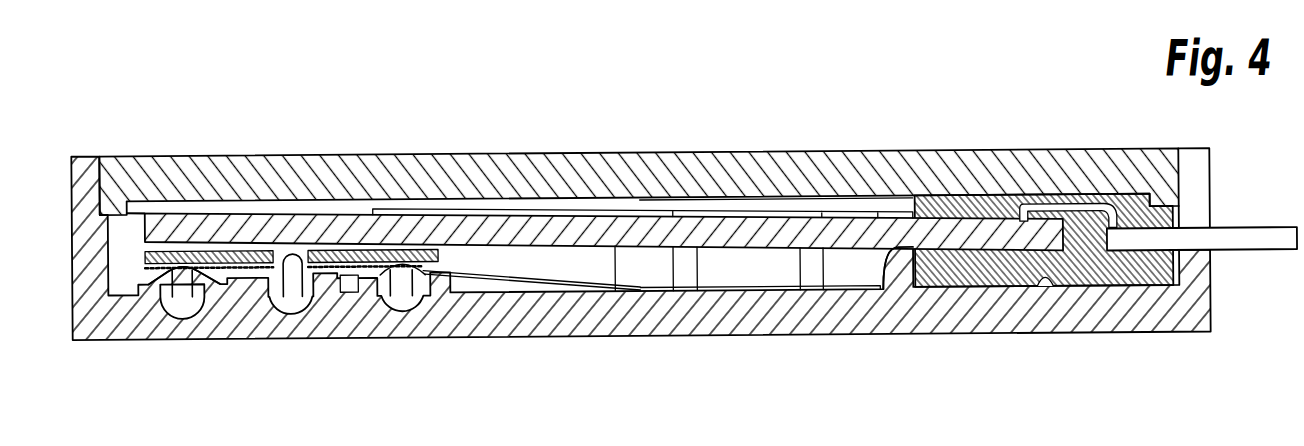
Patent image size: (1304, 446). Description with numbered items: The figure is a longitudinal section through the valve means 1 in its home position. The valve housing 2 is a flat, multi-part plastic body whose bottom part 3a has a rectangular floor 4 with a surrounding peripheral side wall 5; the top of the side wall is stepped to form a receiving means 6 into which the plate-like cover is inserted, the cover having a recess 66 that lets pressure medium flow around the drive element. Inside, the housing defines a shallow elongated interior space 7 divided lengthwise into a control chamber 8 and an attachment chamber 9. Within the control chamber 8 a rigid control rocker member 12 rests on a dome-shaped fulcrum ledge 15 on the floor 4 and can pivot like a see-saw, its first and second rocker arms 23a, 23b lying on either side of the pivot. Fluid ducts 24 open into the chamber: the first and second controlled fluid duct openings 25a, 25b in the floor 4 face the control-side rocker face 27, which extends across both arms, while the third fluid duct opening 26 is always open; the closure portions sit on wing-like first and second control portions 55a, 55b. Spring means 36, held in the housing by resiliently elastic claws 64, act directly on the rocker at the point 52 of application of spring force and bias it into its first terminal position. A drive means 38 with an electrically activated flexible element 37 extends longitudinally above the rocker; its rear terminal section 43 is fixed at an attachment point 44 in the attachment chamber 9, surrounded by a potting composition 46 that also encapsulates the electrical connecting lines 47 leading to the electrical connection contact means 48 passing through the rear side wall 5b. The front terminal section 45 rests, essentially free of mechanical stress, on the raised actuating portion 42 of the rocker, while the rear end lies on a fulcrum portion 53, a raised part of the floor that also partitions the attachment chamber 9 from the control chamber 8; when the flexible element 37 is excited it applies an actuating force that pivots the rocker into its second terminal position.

The valve means 1 is at (904, 126).
The valve housing 2 is at (1100, 321).
The bottom part 3a is at (790, 321).
The floor 4 is at (848, 329).
The side wall 5 is at (87, 306).
The rear side wall 5b is at (1205, 272).
The receiving means 6 is at (100, 181).
The housing interior space 7 is at (591, 298).
The control chamber 8 is at (572, 255).
The attachment chamber 9 is at (1057, 278).
The control rocker member 12 is at (353, 220).
The fulcrum ledge 15 is at (307, 247).
The first rocker arm 23a is at (437, 255).
The second rocker arm 23b is at (232, 249).
The fluid duct 24 is at (181, 313).
The first controlled fluid duct opening 25a is at (412, 282).
The second controlled fluid duct opening 25b is at (162, 312).
The third fluid duct opening 26 is at (288, 310).
The rocker face 27 is at (235, 278).
The spring means 36 is at (720, 170).
The flexible element 37 is at (717, 223).
The drive means 38 is at (652, 196).
The actuating portion 42 is at (180, 264).
The rear terminal section 43 is at (993, 231).
The attachment point 44 is at (1016, 279).
The front terminal section 45 is at (397, 245).
The potting composition 46 is at (1113, 270).
The electrical connecting lines 47 is at (1077, 209).
The electrical connection contact means 48 is at (1255, 240).
The point of application of spring force 52 is at (340, 290).
The fulcrum portion 53 is at (890, 252).
The first control portion 55a is at (478, 249).
The second control portion 55b is at (268, 250).
The claws 64 is at (710, 277).
The recess 66 is at (810, 198).